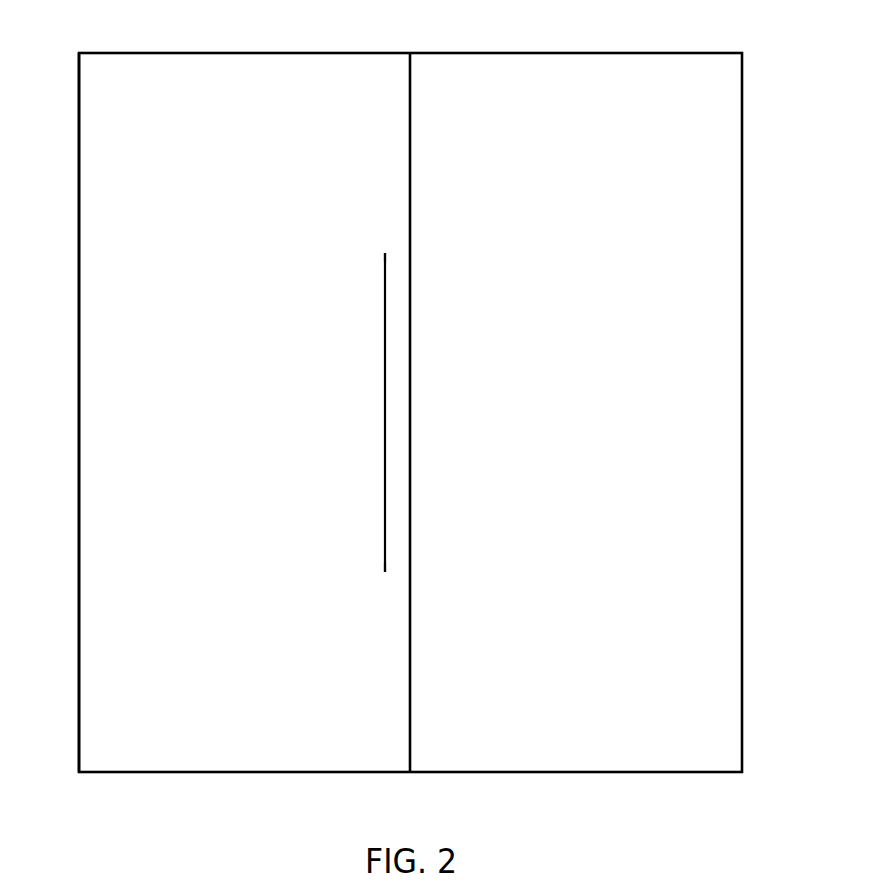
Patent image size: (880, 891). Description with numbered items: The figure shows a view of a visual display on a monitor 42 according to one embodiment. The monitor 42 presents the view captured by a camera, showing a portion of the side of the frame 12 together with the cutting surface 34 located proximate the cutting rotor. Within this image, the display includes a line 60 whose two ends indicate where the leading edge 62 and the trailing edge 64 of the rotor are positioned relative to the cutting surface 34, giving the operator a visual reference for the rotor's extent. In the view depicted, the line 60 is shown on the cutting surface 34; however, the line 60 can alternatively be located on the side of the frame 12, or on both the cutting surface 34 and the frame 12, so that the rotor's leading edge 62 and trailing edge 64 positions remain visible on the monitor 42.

The frame 12 is at (717, 420).
The cutting surface 34 is at (104, 418).
The monitor 42 is at (575, 53).
The line 60 is at (360, 408).
The leading edge 62 is at (369, 247).
The trailing edge 64 is at (366, 578).